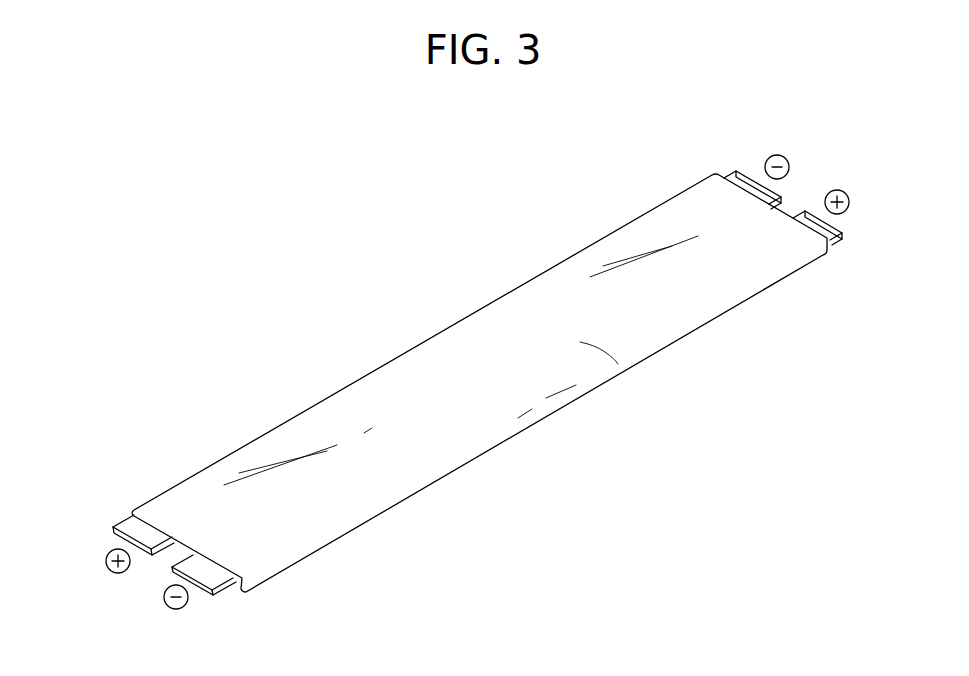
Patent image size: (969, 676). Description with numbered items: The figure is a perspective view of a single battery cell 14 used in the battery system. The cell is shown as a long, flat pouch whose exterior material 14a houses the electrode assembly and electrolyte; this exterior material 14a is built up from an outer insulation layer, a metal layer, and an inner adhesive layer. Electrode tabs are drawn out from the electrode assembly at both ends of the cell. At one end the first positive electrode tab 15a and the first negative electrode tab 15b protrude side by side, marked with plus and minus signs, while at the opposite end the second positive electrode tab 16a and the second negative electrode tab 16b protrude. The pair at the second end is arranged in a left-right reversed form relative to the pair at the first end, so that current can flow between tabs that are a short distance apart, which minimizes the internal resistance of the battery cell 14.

The battery cell 14 is at (391, 318).
The exterior material 14a is at (475, 418).
The first positive electrode tab 15a is at (116, 535).
The first negative electrode tab 15b is at (204, 591).
The second positive electrode tab 16a is at (810, 208).
The second negative electrode tab 16b is at (752, 173).